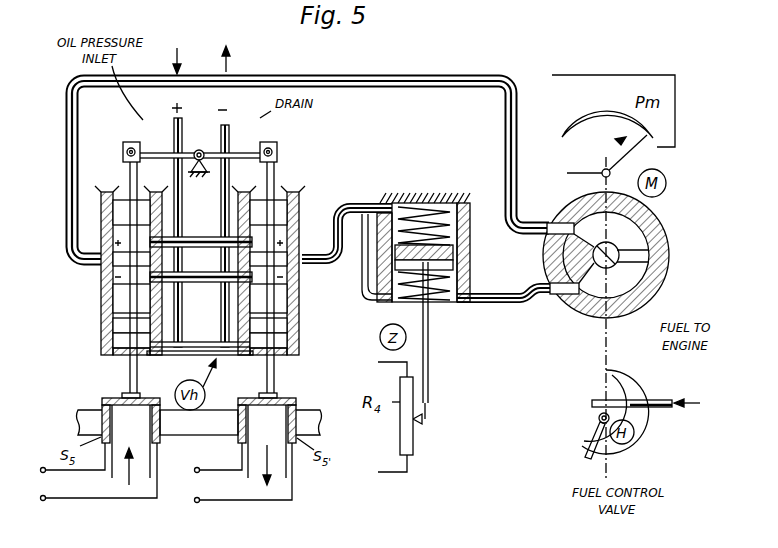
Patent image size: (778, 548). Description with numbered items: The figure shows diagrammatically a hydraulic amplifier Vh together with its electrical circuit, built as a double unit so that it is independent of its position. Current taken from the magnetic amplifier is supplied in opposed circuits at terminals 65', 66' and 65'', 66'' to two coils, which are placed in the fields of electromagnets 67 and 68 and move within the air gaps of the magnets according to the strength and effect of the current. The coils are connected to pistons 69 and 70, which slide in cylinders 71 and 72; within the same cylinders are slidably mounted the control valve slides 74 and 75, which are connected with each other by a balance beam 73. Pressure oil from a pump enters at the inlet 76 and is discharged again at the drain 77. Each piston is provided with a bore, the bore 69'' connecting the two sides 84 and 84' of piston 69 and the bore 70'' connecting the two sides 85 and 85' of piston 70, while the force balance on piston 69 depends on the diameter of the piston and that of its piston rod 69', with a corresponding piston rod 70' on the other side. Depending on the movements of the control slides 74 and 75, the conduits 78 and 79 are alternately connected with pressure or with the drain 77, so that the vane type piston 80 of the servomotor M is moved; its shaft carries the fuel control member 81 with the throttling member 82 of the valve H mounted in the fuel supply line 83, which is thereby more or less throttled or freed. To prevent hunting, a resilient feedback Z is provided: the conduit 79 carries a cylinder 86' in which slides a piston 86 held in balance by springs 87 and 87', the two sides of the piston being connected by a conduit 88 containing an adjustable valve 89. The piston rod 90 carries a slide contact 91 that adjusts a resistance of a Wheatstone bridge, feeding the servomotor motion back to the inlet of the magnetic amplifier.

The circuit terminal 65' is at (61, 461).
The circuit terminal 66' is at (87, 475).
The circuit terminal 65'' is at (230, 476).
The circuit terminal 66'' is at (205, 461).
The electromagnet 67 is at (118, 476).
The electromagnet 68 is at (279, 470).
The piston 69 is at (111, 343).
The piston rod 69' is at (117, 388).
The bore 69'' is at (109, 367).
The piston 70 is at (286, 345).
The piston rod 70' is at (279, 389).
The bore 70'' is at (294, 367).
The cylinder 71 is at (118, 280).
The cylinder 72 is at (285, 280).
The balance beam 73 is at (249, 153).
The control valve slide 74 is at (115, 268).
The control valve slide 75 is at (283, 243).
The pressure oil inlet 76 is at (174, 135).
The oil discharge 77 is at (230, 135).
The conduit 78 is at (333, 79).
The conduit 79 is at (356, 203).
The vane type piston 80 is at (623, 274).
The fuel control member 81 is at (595, 443).
The throttling member 82 is at (627, 453).
The fuel supply line 83 is at (700, 355).
The piston side 84 is at (196, 308).
The piston side 84' is at (112, 326).
The piston side 85 is at (204, 371).
The piston side 85' is at (287, 326).
The piston 86 is at (447, 249).
The cylinder 86' is at (453, 271).
The spring 87 is at (447, 221).
The spring 87' is at (441, 306).
The conduit 88 is at (429, 266).
The adjustable valve 89 is at (364, 258).
The piston rod 90 is at (429, 364).
The slide contact 91 is at (426, 424).